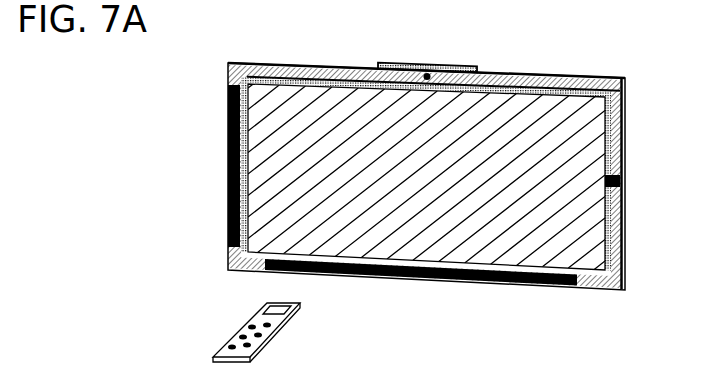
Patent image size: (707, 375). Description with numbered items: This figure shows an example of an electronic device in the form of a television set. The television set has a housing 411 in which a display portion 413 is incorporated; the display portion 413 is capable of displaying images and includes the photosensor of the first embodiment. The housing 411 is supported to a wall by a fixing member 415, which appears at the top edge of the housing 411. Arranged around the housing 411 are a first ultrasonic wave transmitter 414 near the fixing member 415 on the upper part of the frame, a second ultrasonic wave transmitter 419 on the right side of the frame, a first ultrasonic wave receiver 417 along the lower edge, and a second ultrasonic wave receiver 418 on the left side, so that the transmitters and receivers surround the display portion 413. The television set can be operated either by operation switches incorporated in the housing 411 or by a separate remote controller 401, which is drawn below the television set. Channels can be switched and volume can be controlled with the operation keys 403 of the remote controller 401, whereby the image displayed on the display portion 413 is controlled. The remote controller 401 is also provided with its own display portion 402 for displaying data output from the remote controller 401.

The remote controller 401 is at (275, 335).
The display portion 402 is at (263, 307).
The operation keys 403 is at (227, 342).
The housing 411 is at (337, 67).
The display portion 413 is at (284, 127).
The first ultrasonic wave transmitter 414 is at (428, 72).
The fixing member 415 is at (402, 62).
The first ultrasonic wave receiver 417 is at (460, 282).
The second ultrasonic wave receiver 418 is at (228, 163).
The second ultrasonic wave transmitter 419 is at (622, 182).